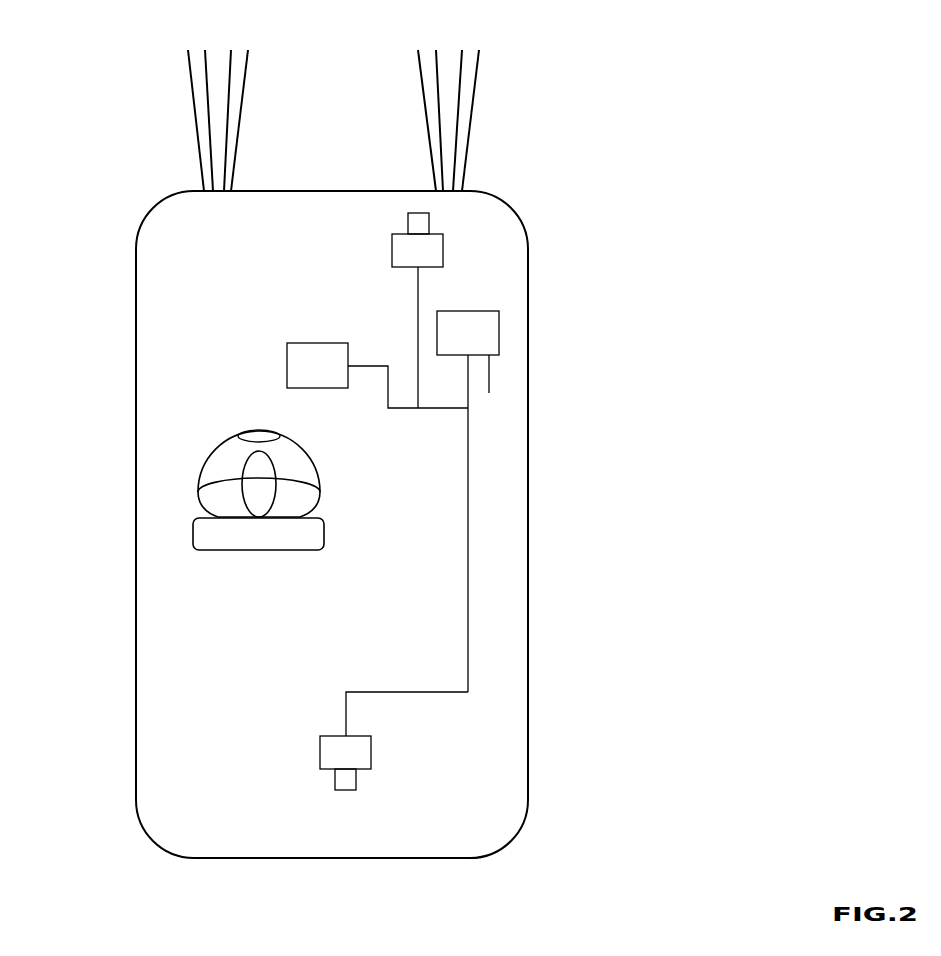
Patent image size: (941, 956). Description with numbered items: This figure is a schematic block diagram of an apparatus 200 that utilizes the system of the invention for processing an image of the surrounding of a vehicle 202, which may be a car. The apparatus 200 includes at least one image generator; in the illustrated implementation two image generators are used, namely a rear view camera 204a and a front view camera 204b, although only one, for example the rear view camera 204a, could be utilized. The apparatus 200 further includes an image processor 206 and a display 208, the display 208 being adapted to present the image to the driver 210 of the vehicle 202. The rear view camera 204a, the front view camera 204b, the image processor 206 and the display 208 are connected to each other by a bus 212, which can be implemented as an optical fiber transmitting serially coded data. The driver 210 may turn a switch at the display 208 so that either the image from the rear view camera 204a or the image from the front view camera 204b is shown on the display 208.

The apparatus 200 is at (481, 494).
The vehicle 202 is at (536, 294).
The rear view camera 204a is at (371, 742).
The front view camera 204b is at (443, 245).
The image processor 206 is at (476, 372).
The display 208 is at (287, 351).
The driver 210 is at (170, 479).
The bus 212 is at (468, 626).